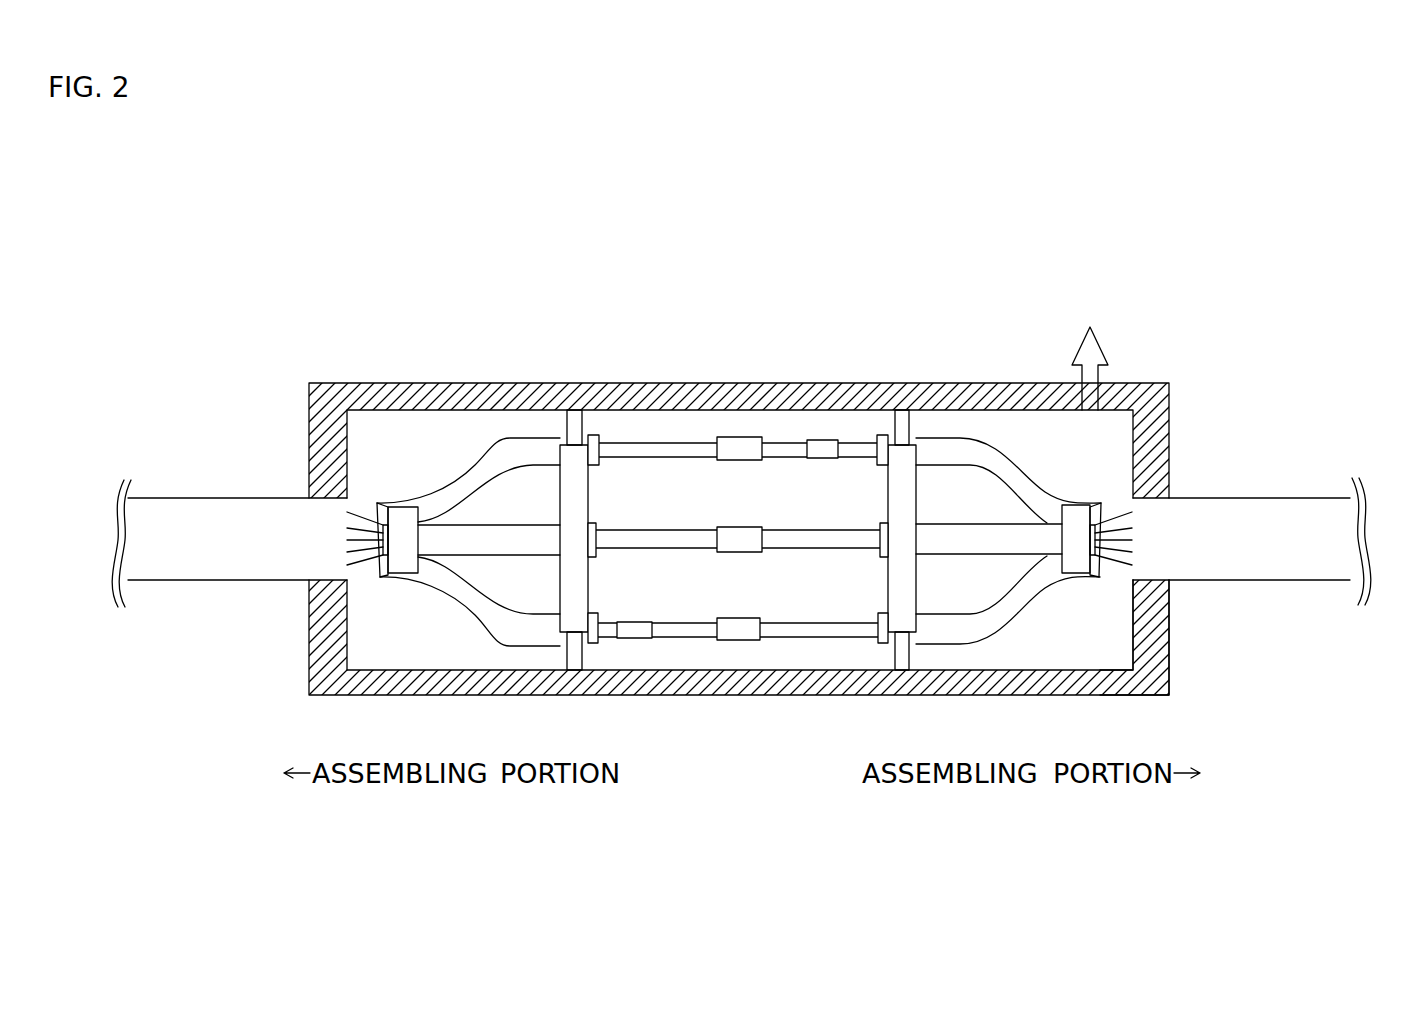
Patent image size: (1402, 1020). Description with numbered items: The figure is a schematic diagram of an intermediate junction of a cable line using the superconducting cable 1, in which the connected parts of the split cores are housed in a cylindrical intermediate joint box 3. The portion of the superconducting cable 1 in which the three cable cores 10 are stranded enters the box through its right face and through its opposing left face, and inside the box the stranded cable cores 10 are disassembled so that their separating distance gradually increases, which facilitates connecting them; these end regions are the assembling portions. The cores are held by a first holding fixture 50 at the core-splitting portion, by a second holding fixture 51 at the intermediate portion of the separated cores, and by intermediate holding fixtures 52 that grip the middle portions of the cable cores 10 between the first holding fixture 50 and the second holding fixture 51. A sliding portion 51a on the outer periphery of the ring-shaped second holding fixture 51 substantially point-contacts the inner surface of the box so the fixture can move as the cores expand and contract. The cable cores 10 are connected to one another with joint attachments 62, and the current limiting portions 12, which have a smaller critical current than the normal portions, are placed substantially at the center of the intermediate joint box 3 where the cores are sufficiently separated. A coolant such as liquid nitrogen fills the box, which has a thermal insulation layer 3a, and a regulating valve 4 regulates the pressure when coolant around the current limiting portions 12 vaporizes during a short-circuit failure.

The superconducting cable 1 is at (211, 498).
The intermediate joint box 3 is at (1172, 440).
The thermal insulation layer 3a is at (1168, 632).
The regulating valve 4 is at (1103, 347).
The cable core 10 is at (650, 440).
The current limiting portion 12 is at (820, 440).
The first holding fixture 50 is at (403, 508).
The second holding fixture 51 is at (590, 518).
The sliding portion 51a is at (912, 412).
The intermediate holding fixture 52 is at (482, 460).
The joint attachment 62 is at (743, 437).